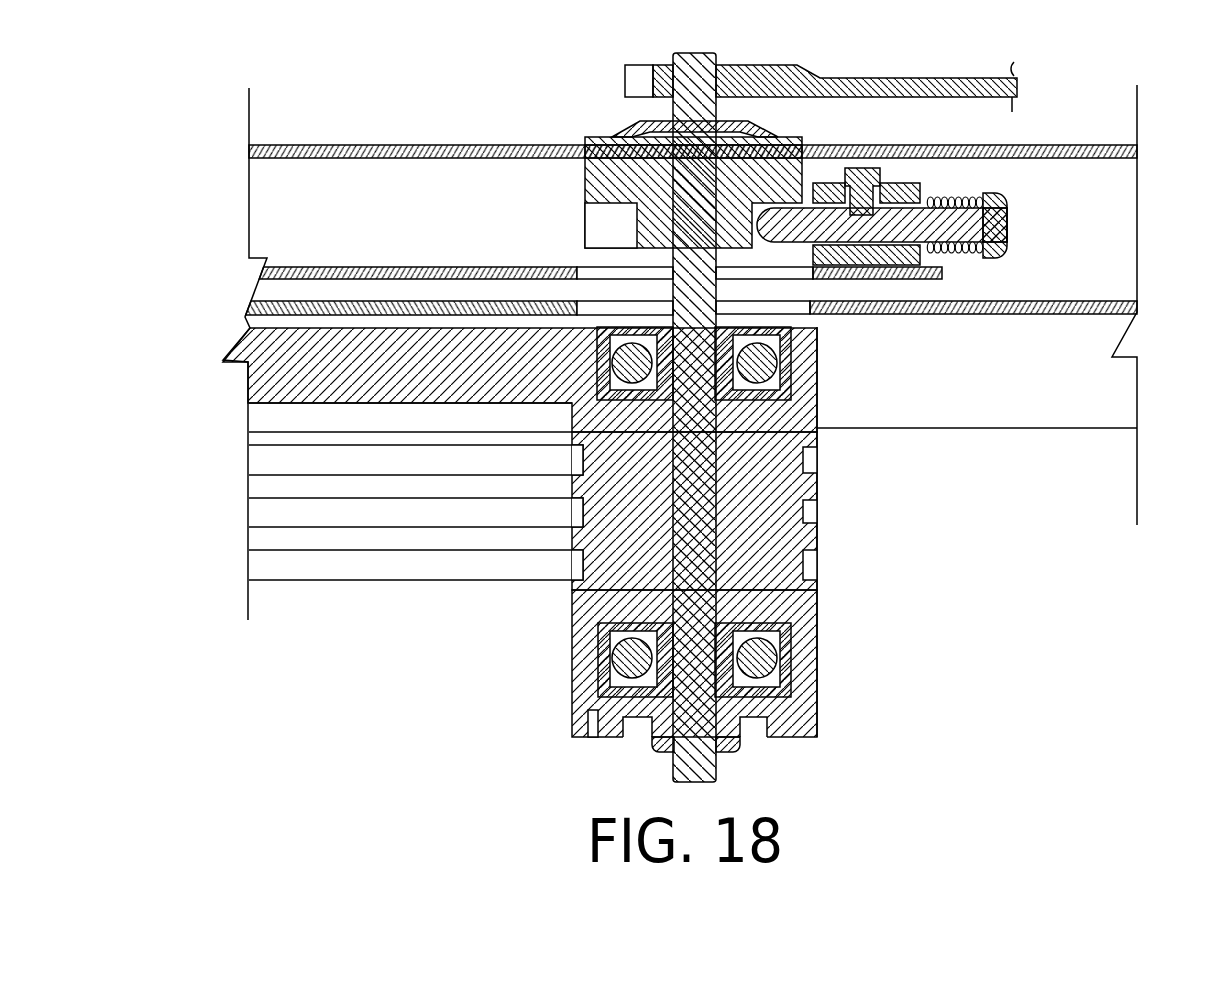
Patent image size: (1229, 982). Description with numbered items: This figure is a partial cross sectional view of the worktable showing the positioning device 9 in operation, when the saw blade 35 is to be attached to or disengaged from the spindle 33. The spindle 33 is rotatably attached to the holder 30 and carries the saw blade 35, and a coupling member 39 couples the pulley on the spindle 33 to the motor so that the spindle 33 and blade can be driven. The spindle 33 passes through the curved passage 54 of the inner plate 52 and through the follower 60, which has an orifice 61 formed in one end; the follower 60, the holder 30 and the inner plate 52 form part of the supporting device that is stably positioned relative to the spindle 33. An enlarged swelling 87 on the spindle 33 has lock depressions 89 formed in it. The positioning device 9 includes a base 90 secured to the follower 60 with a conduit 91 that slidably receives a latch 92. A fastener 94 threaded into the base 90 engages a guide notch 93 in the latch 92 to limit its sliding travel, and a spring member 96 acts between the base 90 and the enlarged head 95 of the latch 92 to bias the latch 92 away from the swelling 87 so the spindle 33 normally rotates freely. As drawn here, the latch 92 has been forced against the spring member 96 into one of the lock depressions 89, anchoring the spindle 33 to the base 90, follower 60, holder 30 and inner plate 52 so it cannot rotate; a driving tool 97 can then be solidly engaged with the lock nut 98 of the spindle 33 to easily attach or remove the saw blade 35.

The positioning device 9 is at (984, 246).
The holder 30 is at (258, 375).
The spindle 33 is at (661, 541).
The saw blade 35 is at (313, 145).
The coupling member 39 is at (833, 571).
The inner plate 52 is at (250, 305).
The curved passage 54 is at (593, 306).
The follower 60 is at (298, 268).
The orifice 61 is at (613, 272).
The swelling 87 is at (641, 156).
The lock depressions 89 is at (598, 228).
The base 90 is at (902, 183).
The conduit 91 is at (858, 250).
The latch 92 is at (955, 207).
The guide notch 93 is at (837, 210).
The fastener 94 is at (863, 170).
The enlarged head 95 is at (997, 203).
The spring member 96 is at (933, 200).
The driving tool 97 is at (1008, 112).
The lock nut 98 is at (733, 65).